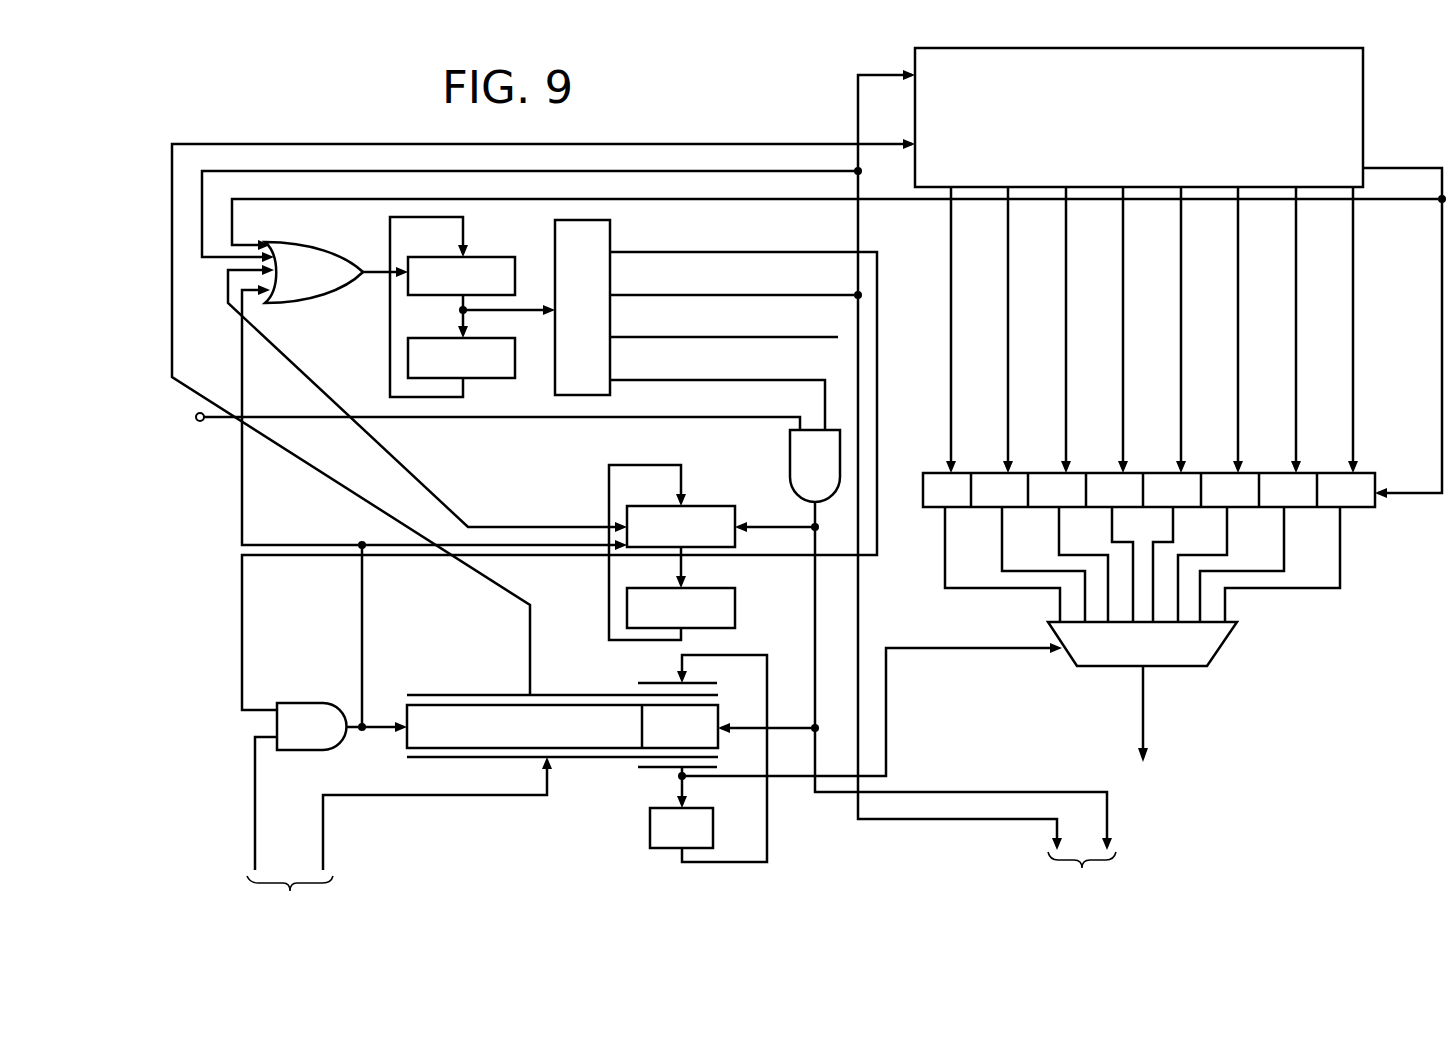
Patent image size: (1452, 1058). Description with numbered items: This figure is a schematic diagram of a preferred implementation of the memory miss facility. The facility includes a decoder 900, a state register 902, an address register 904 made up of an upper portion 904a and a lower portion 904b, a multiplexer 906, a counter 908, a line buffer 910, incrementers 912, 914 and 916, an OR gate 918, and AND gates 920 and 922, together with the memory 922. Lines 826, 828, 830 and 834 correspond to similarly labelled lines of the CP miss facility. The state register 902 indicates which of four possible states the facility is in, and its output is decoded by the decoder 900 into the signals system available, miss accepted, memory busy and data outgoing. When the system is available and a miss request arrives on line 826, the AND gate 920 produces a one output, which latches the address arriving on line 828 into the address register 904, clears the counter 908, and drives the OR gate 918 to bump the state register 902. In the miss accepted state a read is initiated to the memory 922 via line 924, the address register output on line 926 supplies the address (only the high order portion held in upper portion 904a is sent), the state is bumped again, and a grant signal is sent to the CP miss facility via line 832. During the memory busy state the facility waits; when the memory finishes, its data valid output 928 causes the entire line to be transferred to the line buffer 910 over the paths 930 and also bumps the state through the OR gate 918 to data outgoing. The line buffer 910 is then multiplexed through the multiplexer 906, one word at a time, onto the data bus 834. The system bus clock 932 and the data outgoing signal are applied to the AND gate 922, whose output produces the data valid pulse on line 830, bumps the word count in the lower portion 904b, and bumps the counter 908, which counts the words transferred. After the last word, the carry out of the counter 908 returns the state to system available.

The decoder 900 is at (580, 222).
The state register 902 is at (497, 249).
The address register 904 is at (589, 666).
The upper portion 904a is at (495, 705).
The lower portion 904b is at (688, 712).
The multiplexer 906 is at (1227, 648).
The counter 908 is at (698, 506).
The line buffer 910 is at (1250, 508).
The incrementer 912 is at (480, 378).
The incrementer 914 is at (712, 590).
The incrementer 916 is at (650, 828).
The OR gate 918 is at (338, 304).
The AND gate 920 is at (305, 690).
The AND gate / memory 922 is at (1363, 92).
The line 924 is at (856, 108).
The line 926 is at (497, 585).
The data valid output 928 is at (1413, 170).
The paths 930 is at (1176, 330).
The system bus clock 932 is at (197, 414).
The line 826 is at (255, 739).
The line 828 is at (336, 795).
The line 830 is at (858, 795).
The line 832 is at (932, 820).
The data bus 834 is at (1143, 680).